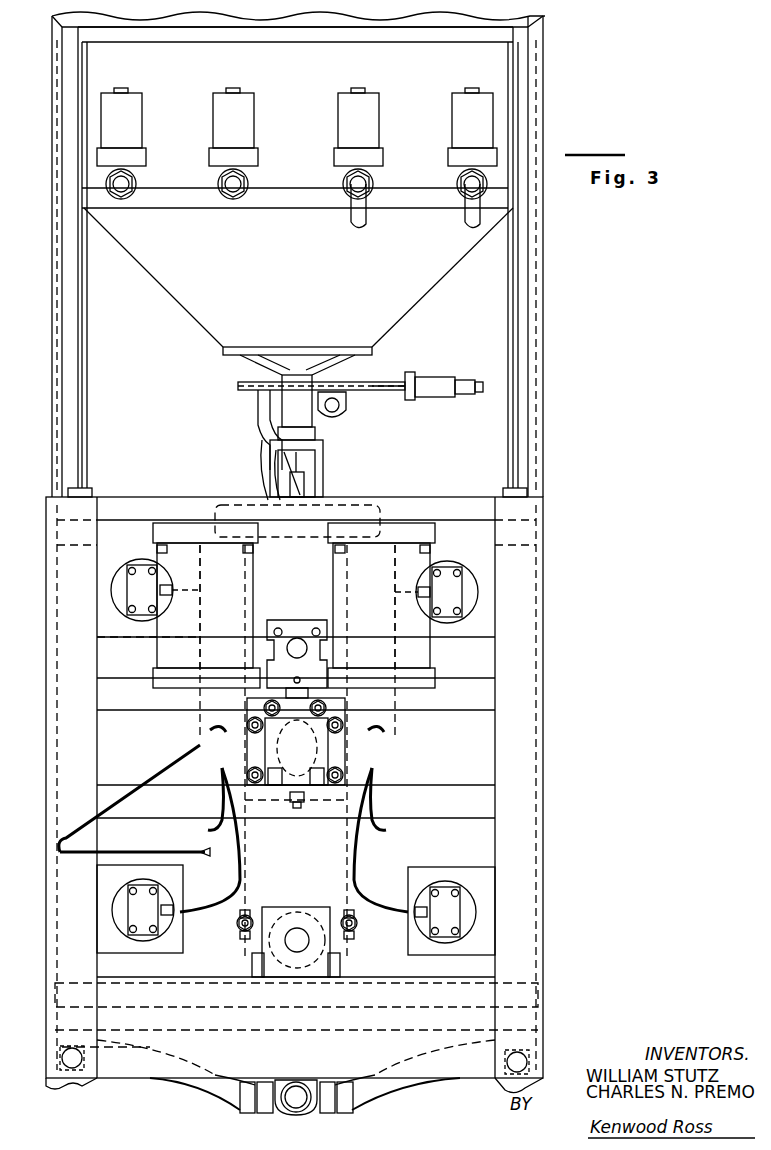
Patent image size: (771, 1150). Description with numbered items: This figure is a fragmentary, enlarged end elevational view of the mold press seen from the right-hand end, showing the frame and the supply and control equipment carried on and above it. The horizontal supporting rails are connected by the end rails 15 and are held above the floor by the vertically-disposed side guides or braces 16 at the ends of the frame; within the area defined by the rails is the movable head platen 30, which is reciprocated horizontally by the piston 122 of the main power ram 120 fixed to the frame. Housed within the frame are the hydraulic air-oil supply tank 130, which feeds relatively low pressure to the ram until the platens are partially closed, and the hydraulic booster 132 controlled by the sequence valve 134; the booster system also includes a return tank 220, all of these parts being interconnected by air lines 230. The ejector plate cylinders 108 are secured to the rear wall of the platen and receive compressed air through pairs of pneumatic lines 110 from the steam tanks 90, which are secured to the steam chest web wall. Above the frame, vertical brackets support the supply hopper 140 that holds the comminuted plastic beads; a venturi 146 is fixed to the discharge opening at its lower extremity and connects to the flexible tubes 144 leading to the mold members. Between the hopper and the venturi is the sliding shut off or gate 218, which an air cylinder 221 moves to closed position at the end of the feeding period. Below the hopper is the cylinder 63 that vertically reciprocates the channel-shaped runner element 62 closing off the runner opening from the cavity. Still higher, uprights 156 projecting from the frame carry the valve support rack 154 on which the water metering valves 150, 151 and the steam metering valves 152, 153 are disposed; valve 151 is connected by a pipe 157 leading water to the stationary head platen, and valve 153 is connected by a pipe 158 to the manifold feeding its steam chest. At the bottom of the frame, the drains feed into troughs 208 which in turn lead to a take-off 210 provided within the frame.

The end rail 15 is at (440, 505).
The side guide or brace 16 is at (46, 666).
The movable head platen 30 is at (495, 716).
The runner element 62 is at (304, 480).
The cylinder 63 is at (310, 420).
The steam tank 90 is at (470, 667).
The ejector plate cylinder 108 is at (112, 598).
The pneumatic line 110 is at (230, 732).
The main power ram 120 is at (262, 748).
The piston 122 is at (330, 748).
The hydraulic air-oil supply tank 130 is at (224, 576).
The hydraulic booster 132 is at (296, 912).
The sequence valve 134 is at (296, 615).
The supply hopper 140 is at (322, 301).
The flexible tube 144 is at (262, 450).
The venturi 146 is at (248, 404).
The water metering valve 150 is at (117, 88).
The water metering valve 151 is at (471, 88).
The steam metering valve 152 is at (231, 88).
The steam metering valve 153 is at (359, 88).
The valve support rack 154 is at (183, 210).
The upright 156 is at (82, 309).
The pipe 157 is at (464, 218).
The pipe 158 is at (350, 218).
The trough 208 is at (294, 1072).
The take-off 210 is at (292, 1114).
The sliding shut off or gate 218 is at (370, 392).
The return tank 220 is at (396, 576).
The air cylinder 221 is at (438, 395).
The air line 230 is at (248, 934).